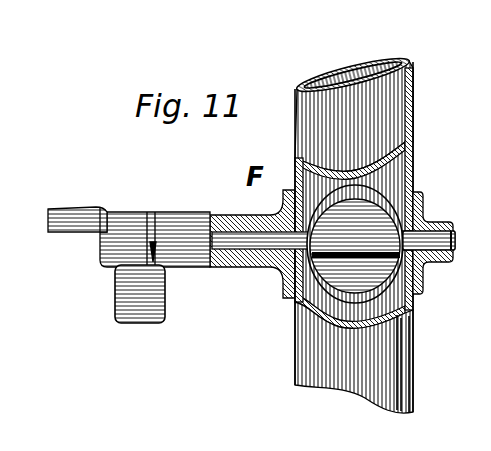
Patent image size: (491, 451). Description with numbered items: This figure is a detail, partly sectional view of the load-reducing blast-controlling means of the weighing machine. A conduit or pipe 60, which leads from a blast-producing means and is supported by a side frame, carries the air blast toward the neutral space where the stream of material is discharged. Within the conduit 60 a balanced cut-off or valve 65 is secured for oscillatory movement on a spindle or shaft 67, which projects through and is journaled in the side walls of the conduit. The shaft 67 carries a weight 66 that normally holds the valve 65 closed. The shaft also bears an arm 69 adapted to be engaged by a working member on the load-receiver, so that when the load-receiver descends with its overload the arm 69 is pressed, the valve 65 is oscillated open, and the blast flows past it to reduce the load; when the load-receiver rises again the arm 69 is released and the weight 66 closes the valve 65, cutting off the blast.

The conduit or pipe 60 is at (415, 111).
The balanced cut-off or valve 65 is at (380, 213).
The weight 66 is at (145, 323).
The spindle or shaft 67 is at (272, 238).
The arm 69 is at (79, 221).